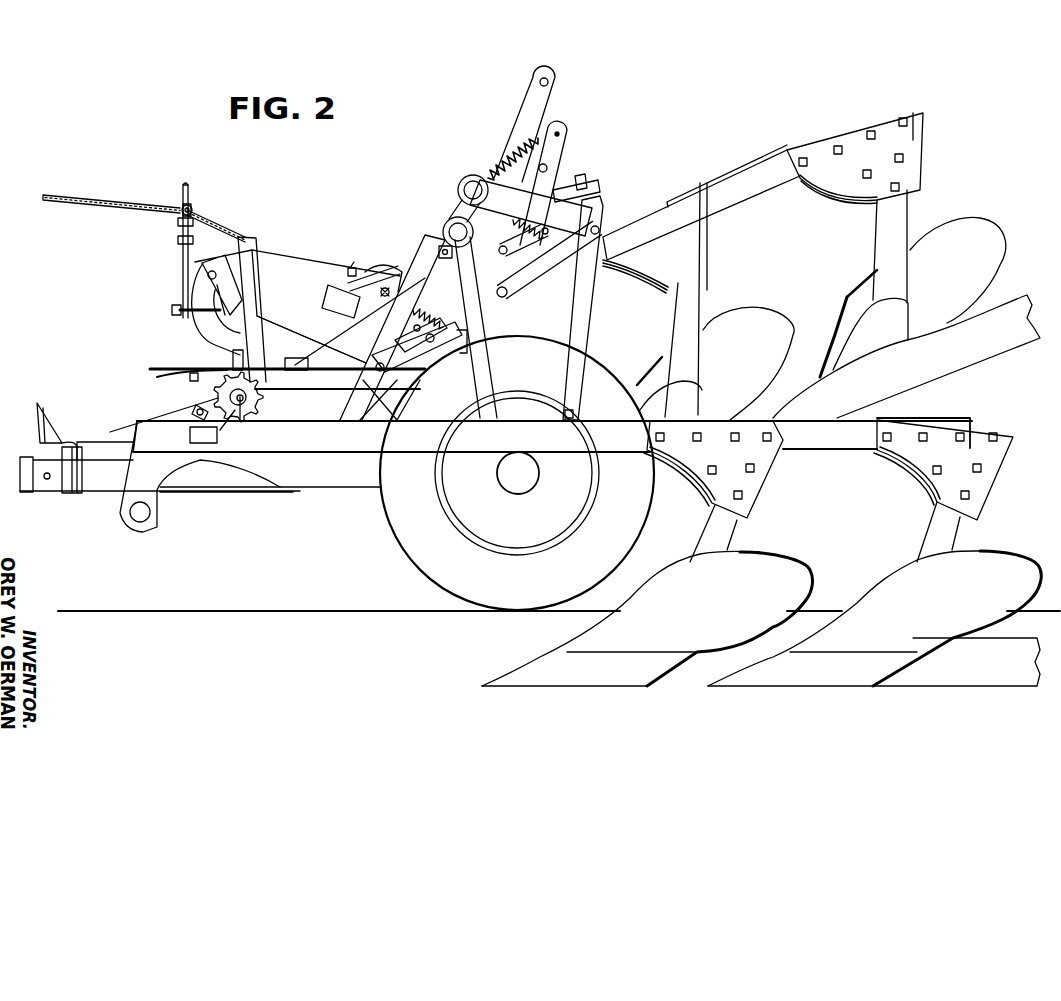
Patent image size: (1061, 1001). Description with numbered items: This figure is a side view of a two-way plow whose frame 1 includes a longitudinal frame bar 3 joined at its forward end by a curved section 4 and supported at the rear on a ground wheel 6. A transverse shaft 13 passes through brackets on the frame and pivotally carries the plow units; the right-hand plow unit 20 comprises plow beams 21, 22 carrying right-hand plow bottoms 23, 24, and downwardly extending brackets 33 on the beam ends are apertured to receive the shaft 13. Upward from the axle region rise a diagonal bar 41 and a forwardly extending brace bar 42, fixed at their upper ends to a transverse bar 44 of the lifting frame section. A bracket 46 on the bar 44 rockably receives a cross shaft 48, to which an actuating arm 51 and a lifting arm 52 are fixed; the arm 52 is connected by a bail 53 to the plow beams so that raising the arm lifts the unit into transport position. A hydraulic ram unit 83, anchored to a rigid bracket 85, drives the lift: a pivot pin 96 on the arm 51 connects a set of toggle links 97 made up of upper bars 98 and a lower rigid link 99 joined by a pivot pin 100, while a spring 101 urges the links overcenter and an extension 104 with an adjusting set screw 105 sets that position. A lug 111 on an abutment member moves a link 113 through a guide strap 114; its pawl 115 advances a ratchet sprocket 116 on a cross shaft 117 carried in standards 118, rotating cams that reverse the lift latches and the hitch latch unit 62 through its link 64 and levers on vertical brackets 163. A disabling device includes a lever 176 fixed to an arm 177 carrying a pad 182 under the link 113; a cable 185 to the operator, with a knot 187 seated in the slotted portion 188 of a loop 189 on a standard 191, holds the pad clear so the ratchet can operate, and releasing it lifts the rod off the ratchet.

The frame 1 is at (282, 496).
The frame bar 3 is at (346, 478).
The curved or arcuate section 4 is at (105, 480).
The ground wheel 6 is at (418, 552).
The transverse bar or shaft 13 is at (138, 514).
The right-hand plow unit 20 is at (702, 183).
The plow beam 21 is at (476, 440).
The plow beam 22 is at (734, 186).
The right-hand plow bottom 23 is at (575, 678).
The right-hand plow bottom 24 is at (802, 678).
The bracket 33 is at (168, 478).
The diagonal bar 41 is at (495, 310).
The brace bar 42 is at (418, 282).
The transverse shaft or bar 44 is at (448, 222).
The bracket 46 is at (460, 192).
The transverse shaft member 48 is at (470, 178).
The actuating arm 51 is at (497, 225).
The lifting arm 52 is at (521, 95).
The bail 53 is at (558, 110).
The latch unit 62 is at (68, 486).
The link 64 is at (117, 430).
The hydraulic ram unit 83 is at (282, 268).
The rigid bracket 85 is at (186, 333).
The pivot pin 96 is at (548, 166).
The toggle links 97 is at (386, 258).
The upper toggle bar 98 is at (435, 252).
The lower toggle link 99 is at (364, 336).
The pivot pin 100 is at (348, 295).
The spring 101 is at (492, 166).
The extension 104 is at (378, 264).
The adjusting set screw 105 is at (352, 275).
The apertured lug 111 is at (405, 380).
The link 113 is at (282, 356).
The guide strap 114 is at (233, 360).
The pawl 115 is at (192, 372).
The ratchet sprocket 116 is at (205, 426).
The cross shaft 117 is at (241, 404).
The standard 118 is at (227, 420).
The vertical bracket 163 is at (552, 435).
The arm 176 is at (243, 236).
The arm 177 is at (225, 401).
The pad 182 is at (200, 408).
The cable 185 is at (86, 198).
The knot 187 is at (178, 213).
The slotted portion 188 is at (191, 207).
The loop 189 is at (194, 180).
The standard 191 is at (183, 266).